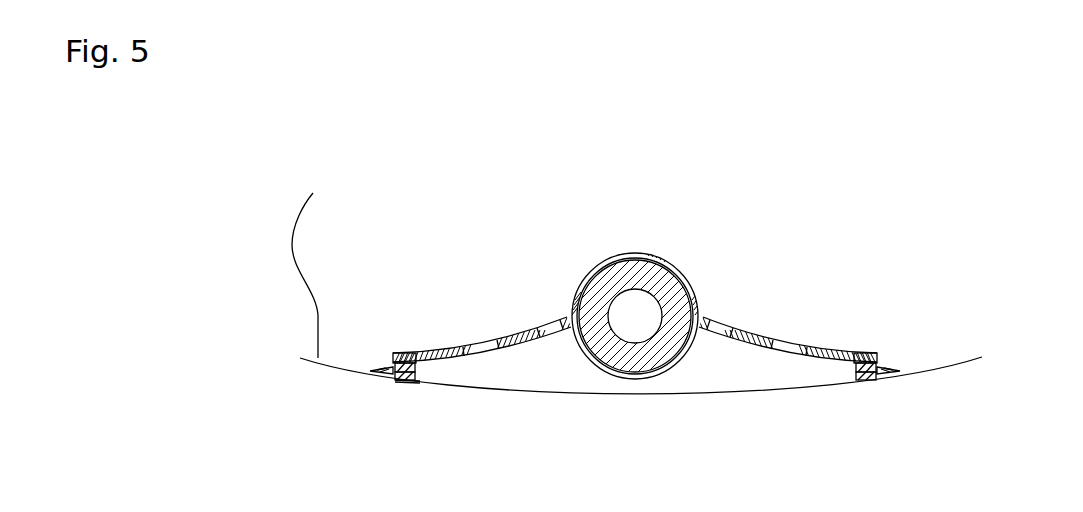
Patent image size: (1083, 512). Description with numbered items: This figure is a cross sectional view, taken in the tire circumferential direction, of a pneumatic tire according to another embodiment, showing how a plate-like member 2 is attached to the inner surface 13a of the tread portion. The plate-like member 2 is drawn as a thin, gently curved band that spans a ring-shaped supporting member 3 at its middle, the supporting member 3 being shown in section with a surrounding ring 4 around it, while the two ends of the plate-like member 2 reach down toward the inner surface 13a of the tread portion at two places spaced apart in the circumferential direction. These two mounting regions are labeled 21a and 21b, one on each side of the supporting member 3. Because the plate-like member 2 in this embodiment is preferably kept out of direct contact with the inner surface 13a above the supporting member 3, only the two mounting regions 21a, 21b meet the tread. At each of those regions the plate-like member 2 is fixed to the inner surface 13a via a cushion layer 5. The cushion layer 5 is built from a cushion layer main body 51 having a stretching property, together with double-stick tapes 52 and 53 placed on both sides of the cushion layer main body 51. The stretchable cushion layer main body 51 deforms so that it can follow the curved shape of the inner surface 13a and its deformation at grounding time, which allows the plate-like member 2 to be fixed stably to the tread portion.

The plate-like member 2 is at (512, 333).
The supporting member 3 is at (675, 350).
The ring 4 is at (633, 254).
The cushion layer 5 is at (362, 373).
The inner surface of the tread portion 13a is at (318, 260).
The first flange 21a is at (406, 353).
The second flange 21b is at (865, 353).
The cushion layer main body 51 is at (438, 383).
The double-stick tape 52 is at (432, 368).
The double-stick tape 53 is at (428, 383).